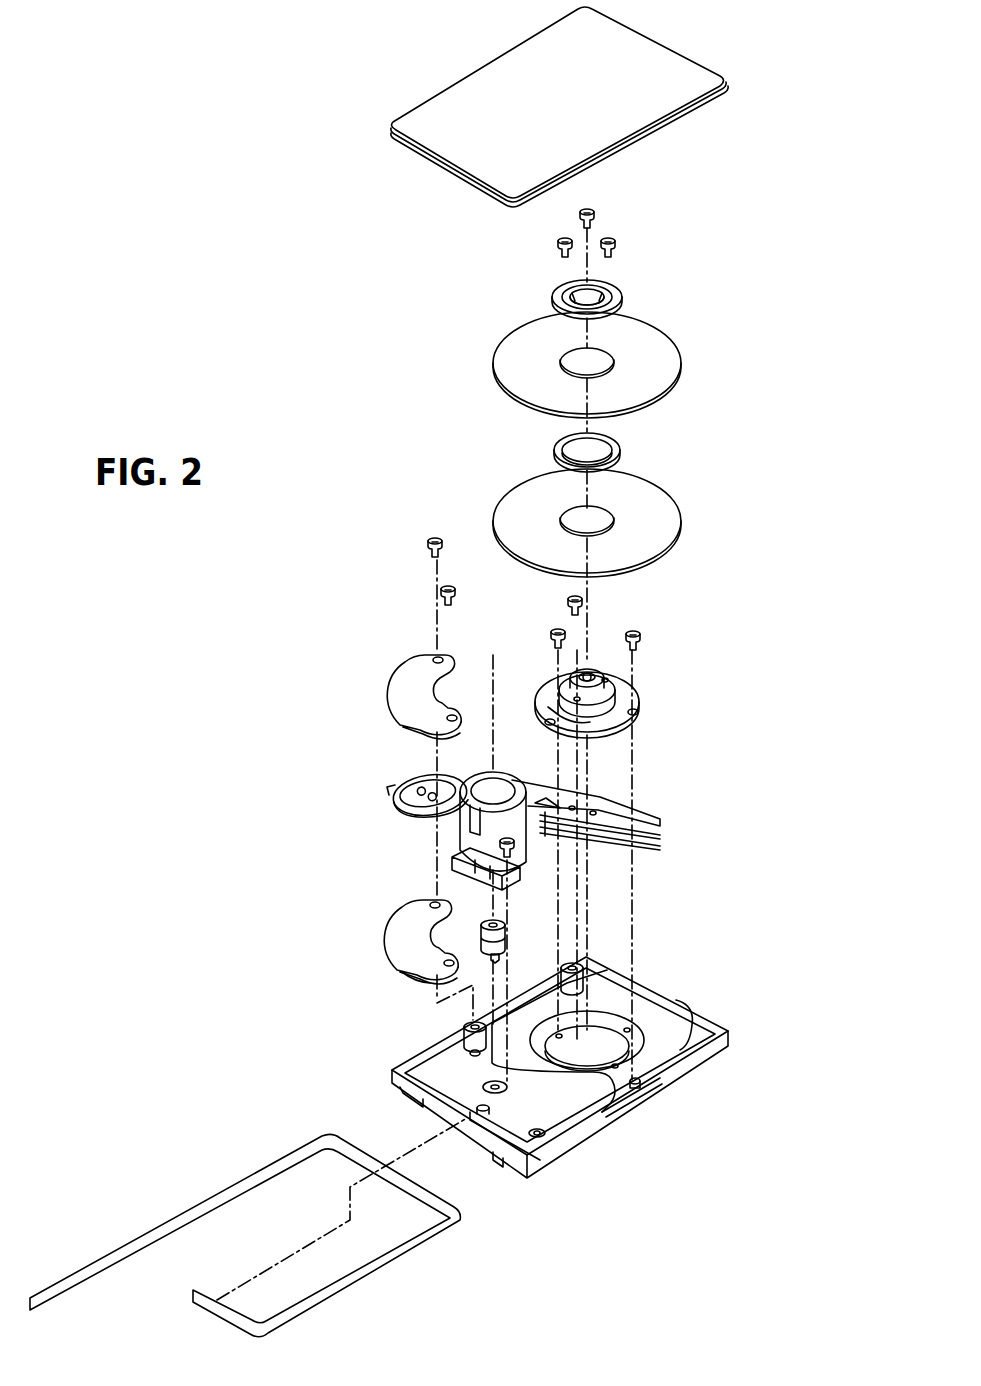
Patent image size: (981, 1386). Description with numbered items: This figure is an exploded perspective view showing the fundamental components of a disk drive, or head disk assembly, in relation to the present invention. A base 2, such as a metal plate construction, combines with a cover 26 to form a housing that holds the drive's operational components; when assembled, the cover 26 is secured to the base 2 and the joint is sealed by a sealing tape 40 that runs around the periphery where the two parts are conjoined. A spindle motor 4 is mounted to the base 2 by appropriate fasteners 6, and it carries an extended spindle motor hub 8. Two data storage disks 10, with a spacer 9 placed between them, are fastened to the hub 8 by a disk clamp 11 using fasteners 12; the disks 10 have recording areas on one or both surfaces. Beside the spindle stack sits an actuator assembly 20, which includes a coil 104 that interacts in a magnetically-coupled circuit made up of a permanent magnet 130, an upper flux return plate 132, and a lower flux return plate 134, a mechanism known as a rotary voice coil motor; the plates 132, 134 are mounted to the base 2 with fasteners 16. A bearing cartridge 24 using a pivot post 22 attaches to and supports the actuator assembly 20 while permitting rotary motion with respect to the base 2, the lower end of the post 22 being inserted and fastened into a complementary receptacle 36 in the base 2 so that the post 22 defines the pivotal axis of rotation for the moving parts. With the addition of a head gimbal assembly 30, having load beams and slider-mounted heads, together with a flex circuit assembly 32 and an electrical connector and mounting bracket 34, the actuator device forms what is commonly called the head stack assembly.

The base 2 is at (560, 1067).
The spindle motor 4 is at (640, 696).
The fasteners 6 is at (566, 606).
The spindle motor hub 8 is at (591, 672).
The spacer 9 is at (618, 446).
The data storage disk 10 is at (665, 364).
The disk clamp 11 is at (620, 292).
The fasteners 12 is at (562, 240).
The fasteners 16 is at (440, 595).
The actuator assembly 20 is at (355, 645).
The pivot post 22 is at (500, 958).
The bearing cartridge 24 is at (506, 937).
The cover 26 is at (435, 132).
The head gimbal assembly 30 is at (605, 805).
The flex circuit assembly 32 is at (515, 860).
The electrical connector and mounting bracket 34 is at (455, 866).
The receptacle 36 is at (508, 1088).
The sealing tape 40 is at (265, 1165).
The coil 104 is at (395, 800).
The permanent magnet 130 is at (408, 896).
The upper flux return plate 132 is at (412, 664).
The lower flux return plate 134 is at (418, 972).